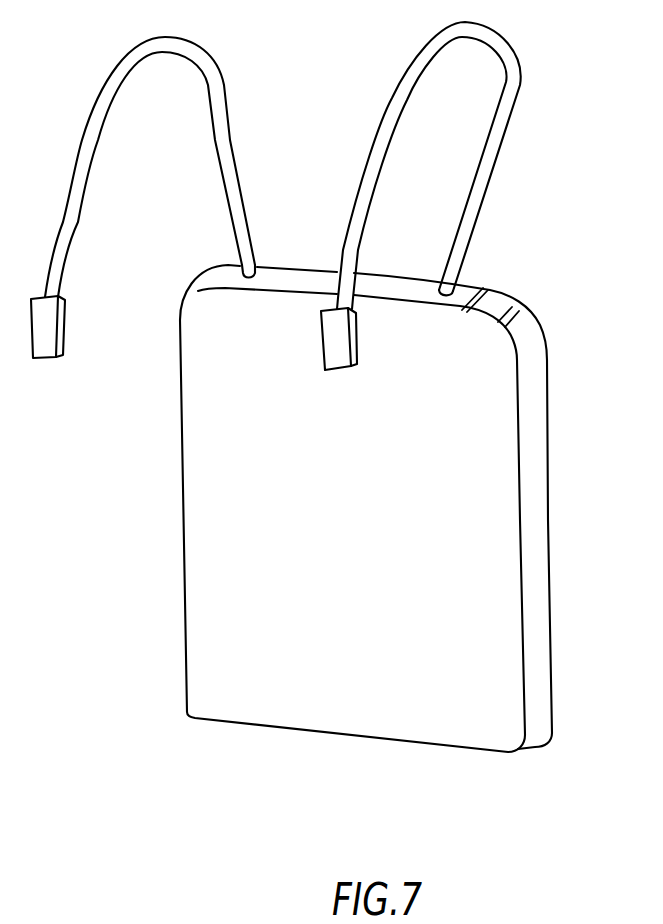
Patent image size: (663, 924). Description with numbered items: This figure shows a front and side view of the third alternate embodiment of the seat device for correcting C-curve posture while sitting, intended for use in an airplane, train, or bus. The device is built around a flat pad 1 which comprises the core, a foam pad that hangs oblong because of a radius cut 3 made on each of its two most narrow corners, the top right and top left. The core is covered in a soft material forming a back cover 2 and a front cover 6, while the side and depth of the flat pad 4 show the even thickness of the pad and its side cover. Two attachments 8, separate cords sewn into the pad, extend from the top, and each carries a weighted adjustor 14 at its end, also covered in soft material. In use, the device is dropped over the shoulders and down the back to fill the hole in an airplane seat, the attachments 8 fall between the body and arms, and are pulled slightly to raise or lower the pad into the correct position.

The flat pad 1 is at (213, 370).
The back cover 2 is at (548, 476).
The radius cut 3 is at (498, 300).
The side and depth of the flat pad 4 is at (540, 710).
The front cover 6 is at (242, 663).
The attachments 8 is at (230, 208).
The weighted adjustors 14 is at (40, 357).